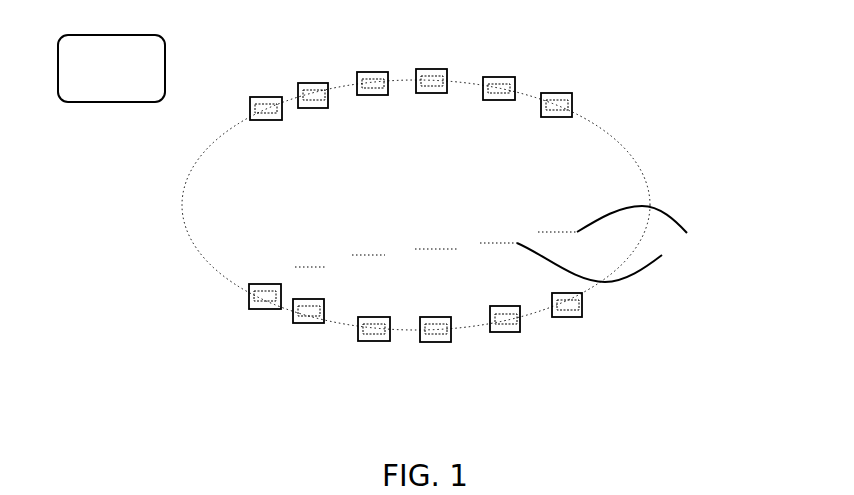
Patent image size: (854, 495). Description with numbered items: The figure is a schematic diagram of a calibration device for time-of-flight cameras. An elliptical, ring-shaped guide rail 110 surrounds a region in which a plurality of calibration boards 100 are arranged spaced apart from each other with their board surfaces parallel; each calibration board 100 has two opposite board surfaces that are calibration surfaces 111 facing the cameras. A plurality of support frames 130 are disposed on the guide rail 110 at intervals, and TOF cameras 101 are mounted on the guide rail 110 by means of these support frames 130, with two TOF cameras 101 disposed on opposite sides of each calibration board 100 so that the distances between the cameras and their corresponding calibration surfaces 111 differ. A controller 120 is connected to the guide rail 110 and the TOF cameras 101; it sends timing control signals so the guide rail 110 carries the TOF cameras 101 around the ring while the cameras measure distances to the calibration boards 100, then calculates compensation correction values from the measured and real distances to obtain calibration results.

The calibration board 100 is at (452, 205).
The TOF camera 101 is at (312, 92).
The guide rail 110 is at (647, 180).
The calibration surface 111 is at (310, 265).
The controller 120 is at (111, 68).
The support frame 130 is at (562, 93).